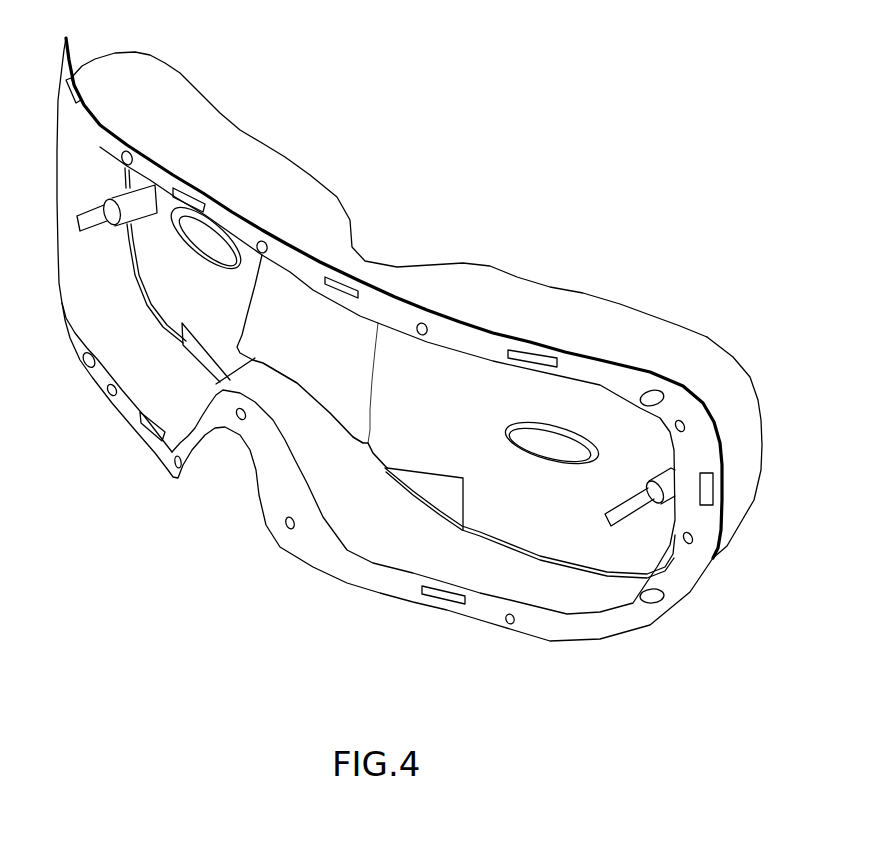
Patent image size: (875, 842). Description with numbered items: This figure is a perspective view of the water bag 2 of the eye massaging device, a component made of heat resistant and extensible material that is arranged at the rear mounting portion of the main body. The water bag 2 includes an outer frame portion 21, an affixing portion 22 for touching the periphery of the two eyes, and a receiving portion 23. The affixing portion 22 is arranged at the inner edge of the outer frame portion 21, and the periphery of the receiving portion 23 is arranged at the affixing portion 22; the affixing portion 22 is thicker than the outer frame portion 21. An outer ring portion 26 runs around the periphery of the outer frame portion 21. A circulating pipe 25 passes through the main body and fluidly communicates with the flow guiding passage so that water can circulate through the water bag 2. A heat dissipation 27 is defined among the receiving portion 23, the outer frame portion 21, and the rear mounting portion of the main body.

The water bag 2 is at (435, 366).
The outer frame portion 21 is at (756, 420).
The affixing portion 22 is at (563, 288).
The receiving portion 23 is at (575, 545).
The circulating pipe 25 is at (628, 506).
The outer ring portion 26 is at (110, 132).
The heat dissipation 27 is at (357, 516).